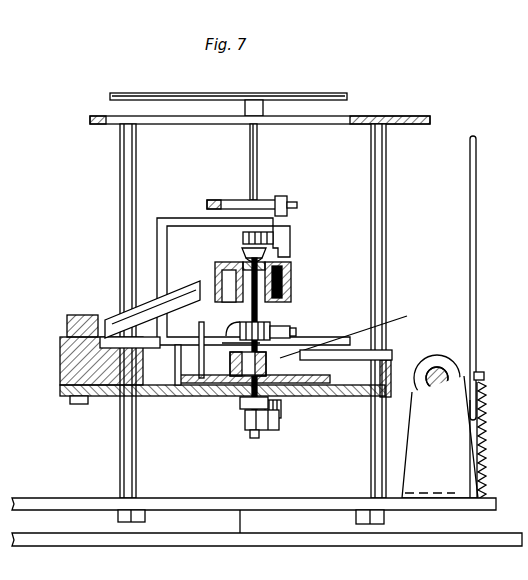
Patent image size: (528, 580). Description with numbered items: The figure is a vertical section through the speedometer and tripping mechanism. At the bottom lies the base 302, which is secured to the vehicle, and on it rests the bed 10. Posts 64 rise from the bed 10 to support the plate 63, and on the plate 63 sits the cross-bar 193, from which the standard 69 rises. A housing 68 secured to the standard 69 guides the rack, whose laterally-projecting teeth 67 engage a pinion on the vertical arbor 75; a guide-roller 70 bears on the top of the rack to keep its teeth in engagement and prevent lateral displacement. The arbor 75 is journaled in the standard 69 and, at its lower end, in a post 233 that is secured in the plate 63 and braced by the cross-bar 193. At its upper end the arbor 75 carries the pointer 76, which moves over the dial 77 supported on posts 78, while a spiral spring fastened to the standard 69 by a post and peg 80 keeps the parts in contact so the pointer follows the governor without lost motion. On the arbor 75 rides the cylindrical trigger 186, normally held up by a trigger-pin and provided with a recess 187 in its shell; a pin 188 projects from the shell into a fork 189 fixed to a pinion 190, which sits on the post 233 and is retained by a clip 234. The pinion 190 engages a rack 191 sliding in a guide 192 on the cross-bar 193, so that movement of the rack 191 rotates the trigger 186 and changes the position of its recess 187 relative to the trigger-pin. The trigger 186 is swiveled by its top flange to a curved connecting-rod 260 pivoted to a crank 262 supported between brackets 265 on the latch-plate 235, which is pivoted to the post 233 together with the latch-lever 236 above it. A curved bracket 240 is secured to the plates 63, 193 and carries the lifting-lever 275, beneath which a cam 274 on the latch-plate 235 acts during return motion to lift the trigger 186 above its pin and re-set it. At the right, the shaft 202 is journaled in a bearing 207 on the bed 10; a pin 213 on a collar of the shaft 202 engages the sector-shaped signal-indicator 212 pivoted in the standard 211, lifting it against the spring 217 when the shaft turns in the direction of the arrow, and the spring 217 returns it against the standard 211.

The bed 10 is at (56, 488).
The plate 63 is at (62, 392).
The posts 64 is at (138, 478).
The laterally-projecting teeth 67 is at (276, 236).
The housing 68 is at (292, 248).
The standard 69 is at (165, 218).
The guide-roller 70 is at (226, 200).
The arbor 75 is at (262, 149).
The pointer 76 is at (182, 95).
The dial 77 is at (388, 116).
The posts 78 is at (388, 184).
The post and peg 80 is at (283, 202).
The trigger 186 is at (218, 270).
The recess 187 is at (278, 300).
The pin 188 is at (292, 280).
The fork 189 is at (272, 318).
The pinion 190 is at (292, 333).
The rack 191 is at (268, 350).
The guide 192 is at (350, 340).
The cross-bar 193 is at (67, 326).
The shaft 202 is at (440, 372).
The bearing 207 is at (452, 476).
The standard 211 is at (470, 447).
The signal-indicator 212 is at (477, 205).
The pin 213 is at (480, 382).
The spring 217 is at (486, 424).
The post 233 is at (252, 410).
The clip 234 is at (228, 330).
The latch-plate 235 is at (330, 381).
The latch-lever 236 is at (218, 388).
The bracket 240 is at (62, 372).
The connecting-rod 260 is at (244, 254).
The crank 262 is at (276, 424).
The brackets 265 is at (256, 438).
The cam 274 is at (186, 400).
The lifting-lever 275 is at (112, 308).
The base 302 is at (92, 524).